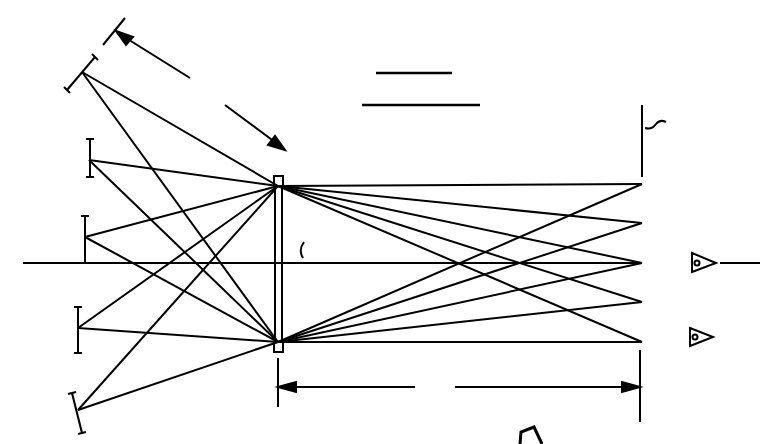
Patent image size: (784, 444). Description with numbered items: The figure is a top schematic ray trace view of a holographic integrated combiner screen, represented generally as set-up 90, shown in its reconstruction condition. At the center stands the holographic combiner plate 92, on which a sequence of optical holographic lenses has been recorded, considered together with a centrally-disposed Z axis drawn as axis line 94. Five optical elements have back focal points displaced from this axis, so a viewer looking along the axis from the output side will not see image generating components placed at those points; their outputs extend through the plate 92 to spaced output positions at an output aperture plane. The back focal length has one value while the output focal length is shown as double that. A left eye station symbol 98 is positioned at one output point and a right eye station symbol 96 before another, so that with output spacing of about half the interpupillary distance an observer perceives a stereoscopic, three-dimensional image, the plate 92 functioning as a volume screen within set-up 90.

The holographic integrated combiner screen set-up 90 is at (546, 148).
The holographic combiner plate 92 is at (280, 175).
The axis line 94 is at (347, 266).
The right eye station symbol 96 is at (703, 252).
The left eye station symbol 98 is at (700, 328).